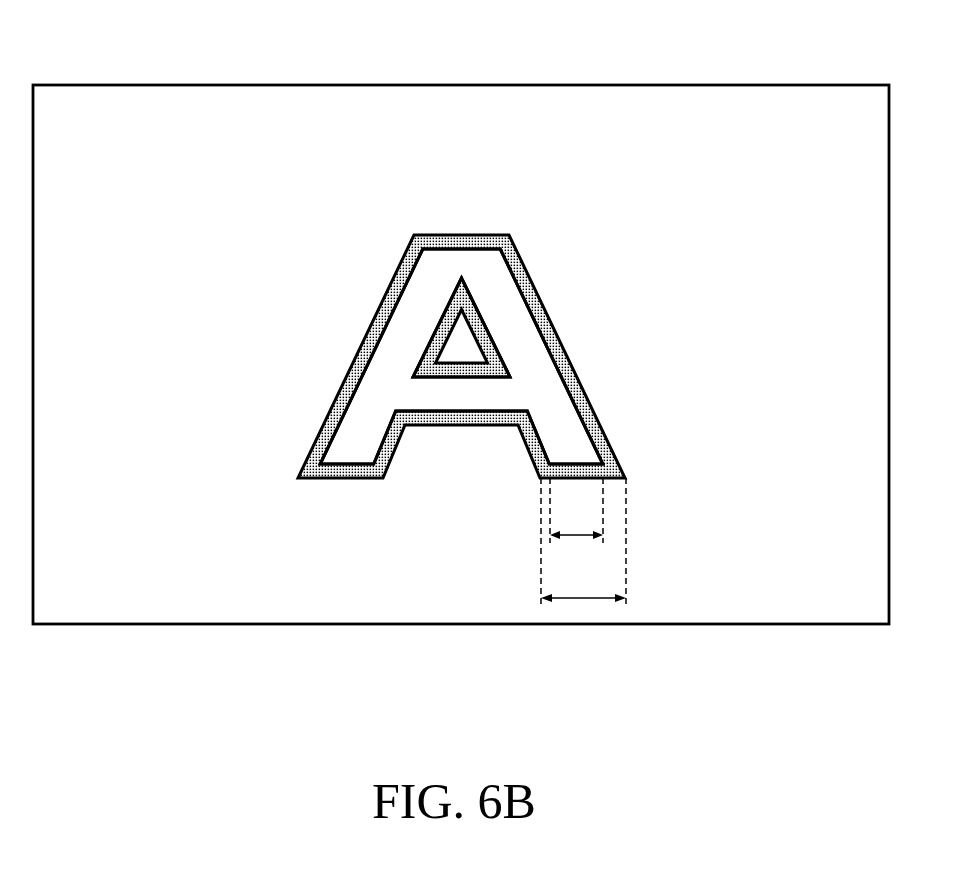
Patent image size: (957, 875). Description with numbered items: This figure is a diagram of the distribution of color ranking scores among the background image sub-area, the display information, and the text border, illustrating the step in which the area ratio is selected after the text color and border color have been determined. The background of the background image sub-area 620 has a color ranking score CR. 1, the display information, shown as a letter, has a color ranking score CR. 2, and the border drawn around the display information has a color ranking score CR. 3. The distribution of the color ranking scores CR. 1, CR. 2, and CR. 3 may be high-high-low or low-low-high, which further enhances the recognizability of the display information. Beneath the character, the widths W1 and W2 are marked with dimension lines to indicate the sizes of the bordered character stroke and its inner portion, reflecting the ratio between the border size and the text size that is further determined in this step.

The background image sub-area 620 is at (111, 84).
The color ranking score of the background CR. 1 is at (198, 239).
The color ranking score of the display information CR. 2 is at (518, 318).
The color ranking score of the border CR. 3 is at (582, 386).
The width of character stroke W1 is at (583, 542).
The width of inner band W2 is at (576, 510).